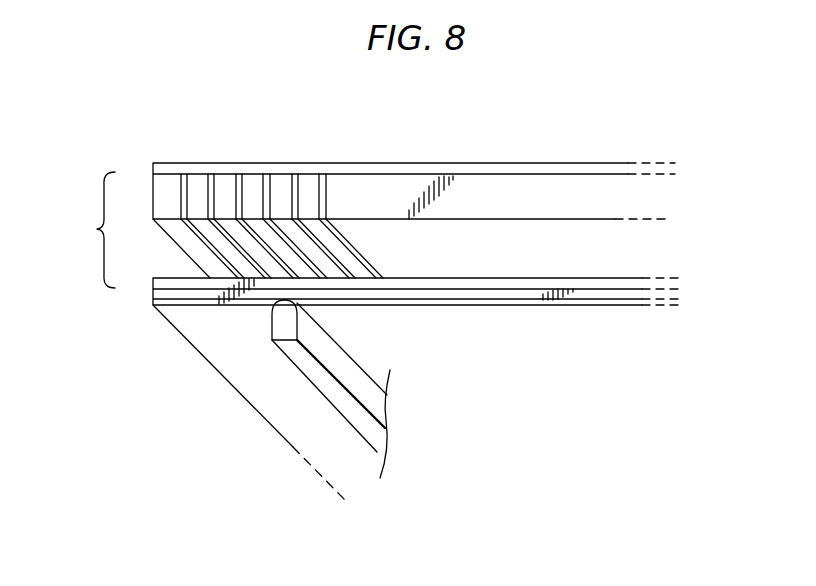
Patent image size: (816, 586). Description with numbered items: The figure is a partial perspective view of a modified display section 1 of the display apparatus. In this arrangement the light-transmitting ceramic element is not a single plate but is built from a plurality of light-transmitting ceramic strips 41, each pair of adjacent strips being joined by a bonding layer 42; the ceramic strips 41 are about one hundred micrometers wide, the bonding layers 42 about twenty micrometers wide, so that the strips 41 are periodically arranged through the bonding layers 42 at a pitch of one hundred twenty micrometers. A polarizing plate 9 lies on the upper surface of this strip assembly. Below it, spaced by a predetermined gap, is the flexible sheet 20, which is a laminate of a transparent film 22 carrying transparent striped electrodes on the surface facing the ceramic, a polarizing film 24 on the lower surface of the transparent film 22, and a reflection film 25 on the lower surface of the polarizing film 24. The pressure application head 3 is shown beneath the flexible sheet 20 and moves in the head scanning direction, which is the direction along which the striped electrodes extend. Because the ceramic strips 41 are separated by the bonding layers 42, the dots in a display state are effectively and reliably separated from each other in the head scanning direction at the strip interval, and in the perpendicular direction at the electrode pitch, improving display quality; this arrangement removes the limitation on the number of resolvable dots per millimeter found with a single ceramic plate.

The display section 1 is at (87, 248).
The polarizing plate 9 is at (487, 163).
The light-transmitting ceramic strips 41 is at (198, 185).
The bonding layers 42 is at (242, 183).
The flexible sheet 20 is at (650, 384).
The transparent film 22 is at (477, 282).
The polarizing film 24 is at (528, 300).
The reflection film 25 is at (583, 305).
The pressure application head 3 is at (325, 352).